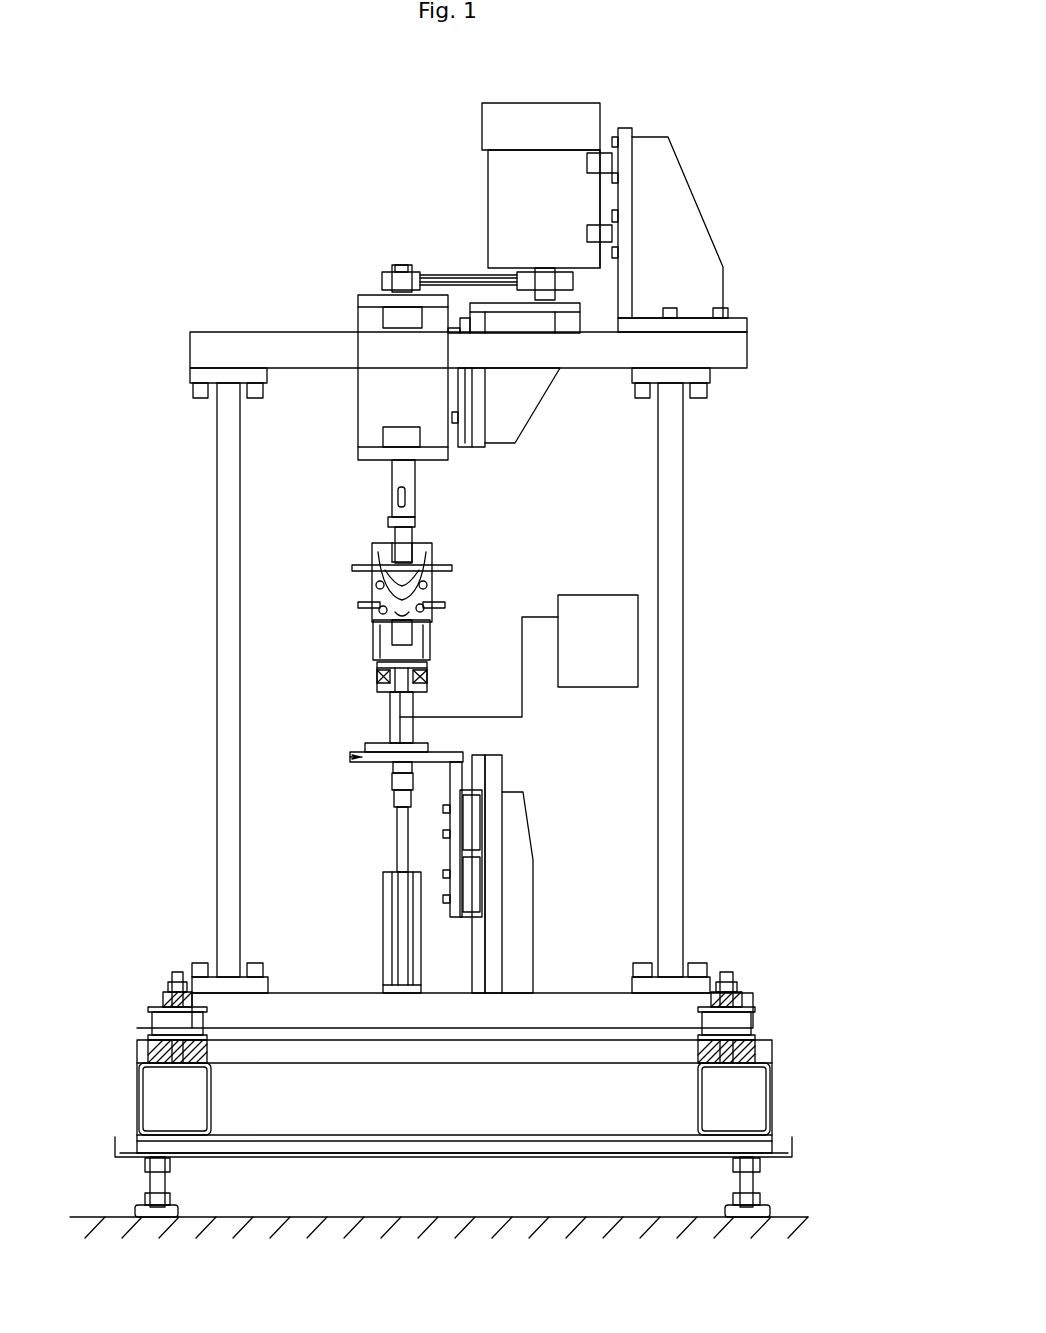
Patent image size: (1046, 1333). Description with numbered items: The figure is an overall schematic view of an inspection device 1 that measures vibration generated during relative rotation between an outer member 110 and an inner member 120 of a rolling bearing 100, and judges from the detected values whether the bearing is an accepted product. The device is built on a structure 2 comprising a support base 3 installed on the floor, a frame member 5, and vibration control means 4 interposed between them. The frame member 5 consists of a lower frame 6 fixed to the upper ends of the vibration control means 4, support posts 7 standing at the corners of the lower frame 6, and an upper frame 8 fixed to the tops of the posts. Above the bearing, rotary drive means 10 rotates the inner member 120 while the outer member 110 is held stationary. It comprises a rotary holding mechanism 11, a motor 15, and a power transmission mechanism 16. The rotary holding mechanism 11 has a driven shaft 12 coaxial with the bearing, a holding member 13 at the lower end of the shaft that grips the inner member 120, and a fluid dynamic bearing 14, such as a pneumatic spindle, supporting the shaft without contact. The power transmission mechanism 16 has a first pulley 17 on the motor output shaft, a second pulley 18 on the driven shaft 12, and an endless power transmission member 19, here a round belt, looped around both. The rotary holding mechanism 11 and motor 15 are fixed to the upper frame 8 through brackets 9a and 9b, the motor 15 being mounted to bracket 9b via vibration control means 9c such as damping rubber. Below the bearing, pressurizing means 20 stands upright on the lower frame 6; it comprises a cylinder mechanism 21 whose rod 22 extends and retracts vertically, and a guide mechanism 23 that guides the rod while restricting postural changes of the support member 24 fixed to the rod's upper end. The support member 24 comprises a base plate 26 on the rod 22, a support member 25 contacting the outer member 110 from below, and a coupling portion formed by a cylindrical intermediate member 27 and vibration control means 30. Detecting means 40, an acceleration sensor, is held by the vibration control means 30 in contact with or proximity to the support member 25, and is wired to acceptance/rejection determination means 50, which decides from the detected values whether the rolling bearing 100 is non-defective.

The inspection device 1 is at (777, 155).
The structure 2 is at (197, 857).
The support base 3 is at (137, 1110).
The vibration control means 4 is at (162, 1023).
The frame member 5 is at (705, 808).
The lower frame 6 is at (580, 1017).
The support posts 7 is at (217, 448).
The upper frame 8 is at (232, 340).
The bracket 9a is at (510, 420).
The bracket 9b is at (685, 237).
The vibration control means 9c is at (612, 233).
The rotary drive means 10 is at (440, 152).
The rotary holding mechanism 11 is at (340, 453).
The driven shaft 12 is at (415, 478).
The holding member 13 is at (397, 585).
The fluid dynamic bearing 14 is at (358, 413).
The motor 15 is at (524, 115).
The power transmission mechanism 16 is at (552, 239).
The first pulley 17 is at (573, 280).
The second pulley 18 is at (382, 283).
The endless power transmission member 19 is at (440, 276).
The pressurizing means 20 is at (325, 905).
The cylinder mechanism 21 is at (383, 948).
The rod 22 is at (397, 848).
The guide mechanism 23 is at (503, 827).
The support member 24 is at (420, 713).
The support member 25 is at (373, 640).
The base plate 26 is at (350, 757).
The intermediate member 27 is at (390, 726).
The vibration control means 30 is at (377, 677).
The detecting means 40 is at (425, 677).
The acceptance/rejection determination means 50 is at (597, 607).
The rolling bearing 100 is at (440, 595).
The outer member 110 is at (360, 600).
The inner member 120 is at (418, 605).